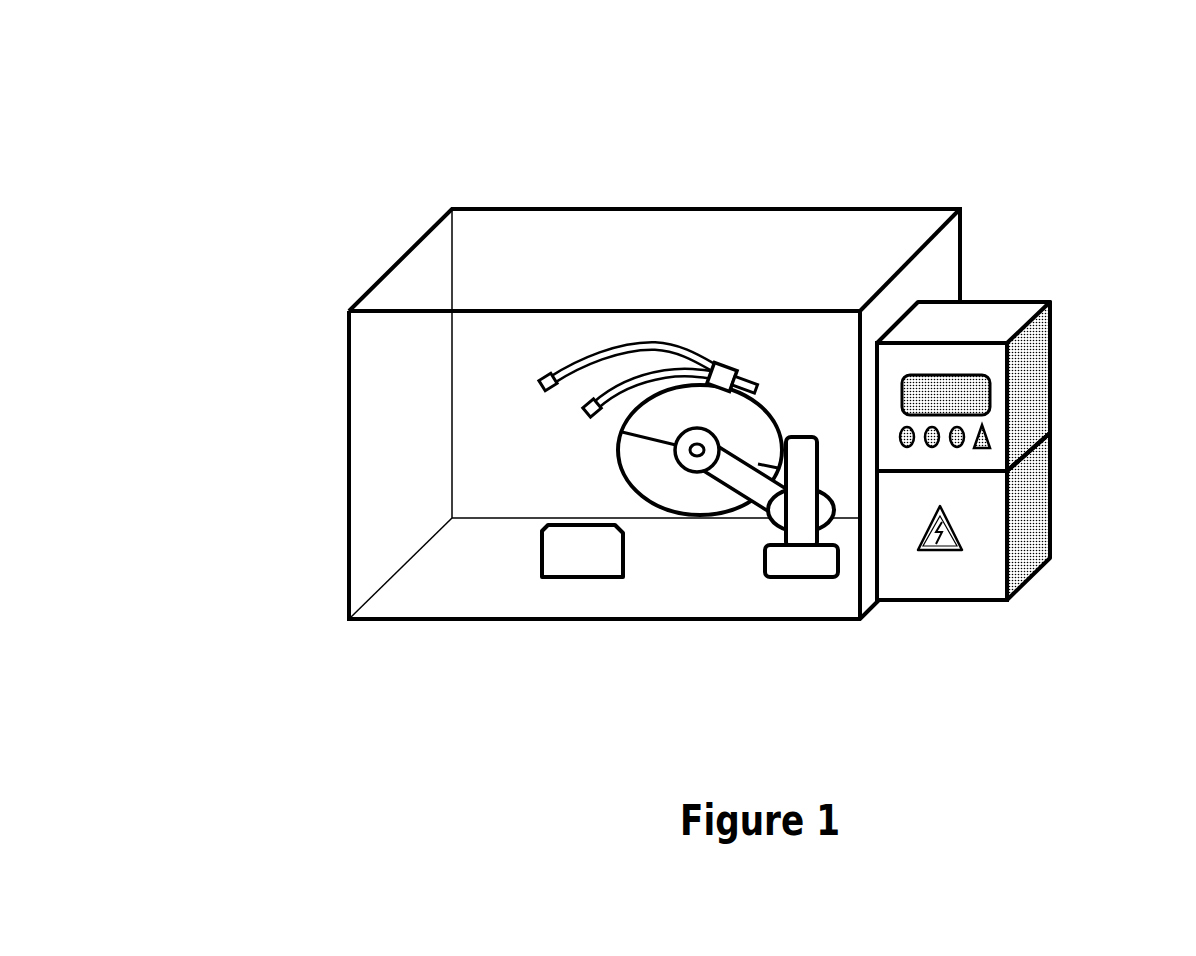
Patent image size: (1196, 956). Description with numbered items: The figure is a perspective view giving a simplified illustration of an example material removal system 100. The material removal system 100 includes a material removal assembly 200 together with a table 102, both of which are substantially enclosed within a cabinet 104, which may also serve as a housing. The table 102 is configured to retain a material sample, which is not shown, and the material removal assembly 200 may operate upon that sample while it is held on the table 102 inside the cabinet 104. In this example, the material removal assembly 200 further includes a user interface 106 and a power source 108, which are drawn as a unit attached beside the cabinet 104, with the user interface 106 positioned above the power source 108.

The material removal system 100 is at (312, 90).
The table 102 is at (582, 551).
The cabinet 104 is at (349, 465).
The user interface 106 is at (1052, 365).
The power source 108 is at (1052, 492).
The material removal assembly 200 is at (738, 346).